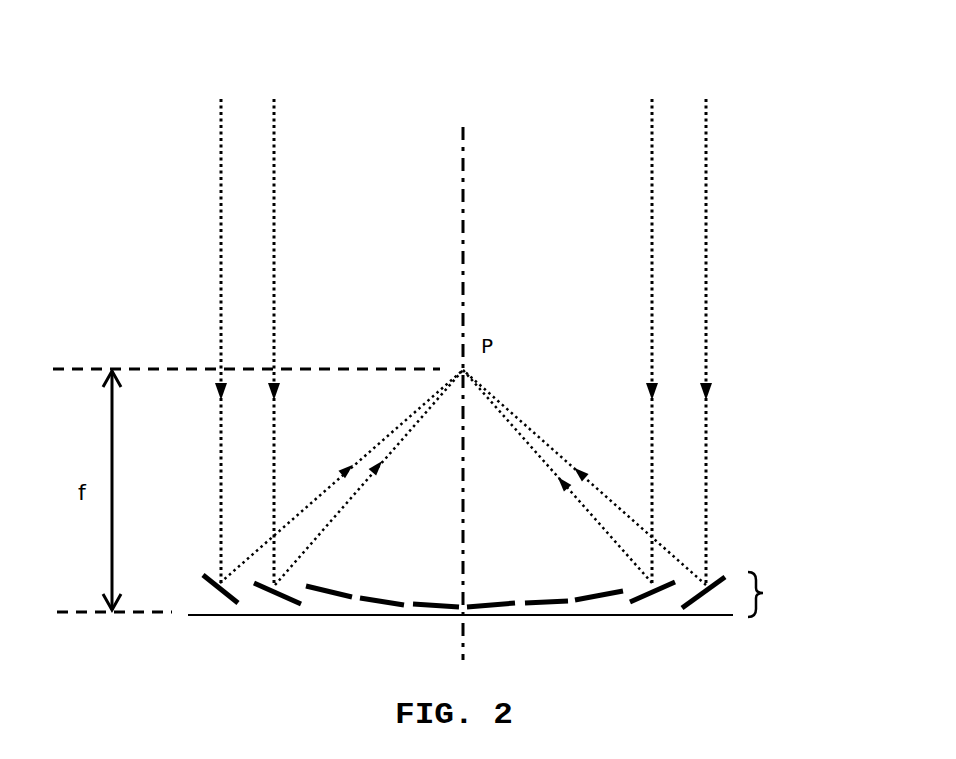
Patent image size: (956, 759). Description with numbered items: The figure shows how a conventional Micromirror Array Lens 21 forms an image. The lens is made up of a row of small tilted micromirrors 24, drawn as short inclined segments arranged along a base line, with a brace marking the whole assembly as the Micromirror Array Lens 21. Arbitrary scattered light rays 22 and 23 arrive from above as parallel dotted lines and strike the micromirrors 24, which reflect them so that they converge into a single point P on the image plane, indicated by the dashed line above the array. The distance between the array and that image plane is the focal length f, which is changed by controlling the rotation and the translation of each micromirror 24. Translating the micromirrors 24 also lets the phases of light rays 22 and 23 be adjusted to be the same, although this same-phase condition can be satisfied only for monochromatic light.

The Micromirror Array Lens 21 is at (793, 602).
The light ray 22 is at (637, 123).
The light ray 23 is at (723, 168).
The micromirror 24 is at (215, 585).